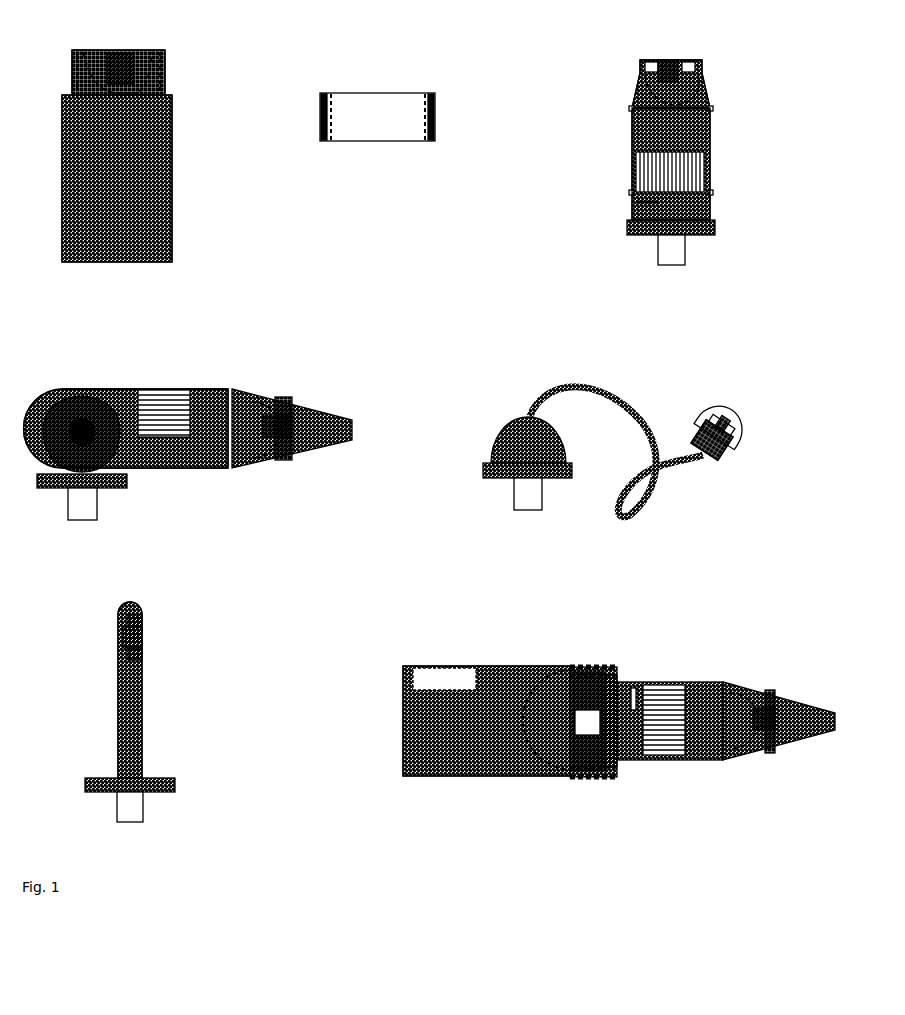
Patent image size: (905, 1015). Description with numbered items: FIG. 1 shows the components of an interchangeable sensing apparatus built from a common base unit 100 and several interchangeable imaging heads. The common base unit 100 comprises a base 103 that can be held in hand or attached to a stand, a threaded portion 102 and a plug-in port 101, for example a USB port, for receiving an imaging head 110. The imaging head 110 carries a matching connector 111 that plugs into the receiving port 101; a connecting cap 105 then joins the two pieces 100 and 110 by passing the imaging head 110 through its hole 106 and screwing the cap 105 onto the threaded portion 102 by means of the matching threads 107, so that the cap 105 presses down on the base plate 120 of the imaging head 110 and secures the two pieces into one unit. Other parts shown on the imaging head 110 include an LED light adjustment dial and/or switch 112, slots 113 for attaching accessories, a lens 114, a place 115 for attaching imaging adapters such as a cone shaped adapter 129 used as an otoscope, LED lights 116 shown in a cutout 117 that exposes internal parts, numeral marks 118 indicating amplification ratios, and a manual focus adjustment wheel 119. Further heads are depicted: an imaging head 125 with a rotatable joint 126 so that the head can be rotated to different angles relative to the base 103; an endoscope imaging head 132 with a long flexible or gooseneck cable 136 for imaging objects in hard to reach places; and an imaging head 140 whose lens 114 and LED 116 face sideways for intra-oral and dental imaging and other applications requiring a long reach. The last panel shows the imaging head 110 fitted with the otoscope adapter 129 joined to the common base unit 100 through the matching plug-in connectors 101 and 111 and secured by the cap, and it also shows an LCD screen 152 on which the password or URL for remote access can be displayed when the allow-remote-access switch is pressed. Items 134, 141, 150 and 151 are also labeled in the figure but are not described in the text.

The common base unit 100 is at (117, 186).
The plug-in port 101 is at (118, 62).
The threaded portion 102 is at (162, 80).
The base 103 is at (167, 160).
The connecting cap 105 is at (593, 666).
The hole 106 is at (373, 93).
The matching threads 107 is at (423, 127).
The imaging head 110 is at (708, 682).
The matching connector 111 is at (664, 249).
The LED light adjustment dial and/or switch 112 is at (636, 203).
The slots for attaching accessories 113 is at (630, 110).
The lens 114 is at (668, 78).
The place for attaching imaging adapters 115 is at (662, 56).
The LED lights 116 is at (695, 68).
The cutout 117 is at (688, 92).
The numeral marks indicating amplification ratios 118 is at (712, 147).
The manual focus adjustment wheel 119 is at (685, 177).
The base plate 120 is at (716, 228).
The imaging head with rotatable joint 125 is at (137, 472).
The rotatable joint 126 is at (80, 418).
The cone shaped adapter 129 is at (320, 432).
The endoscope imaging head 132 is at (712, 495).
The connector dome 134 is at (740, 408).
The gooseneck cable 136 is at (545, 397).
The imaging head with side-facing lens 140 is at (184, 722).
The probe rod 141 is at (120, 698).
The combined device assembly 150 is at (486, 759).
The camera aperture 151 is at (590, 728).
The LCD screen 152 is at (443, 670).